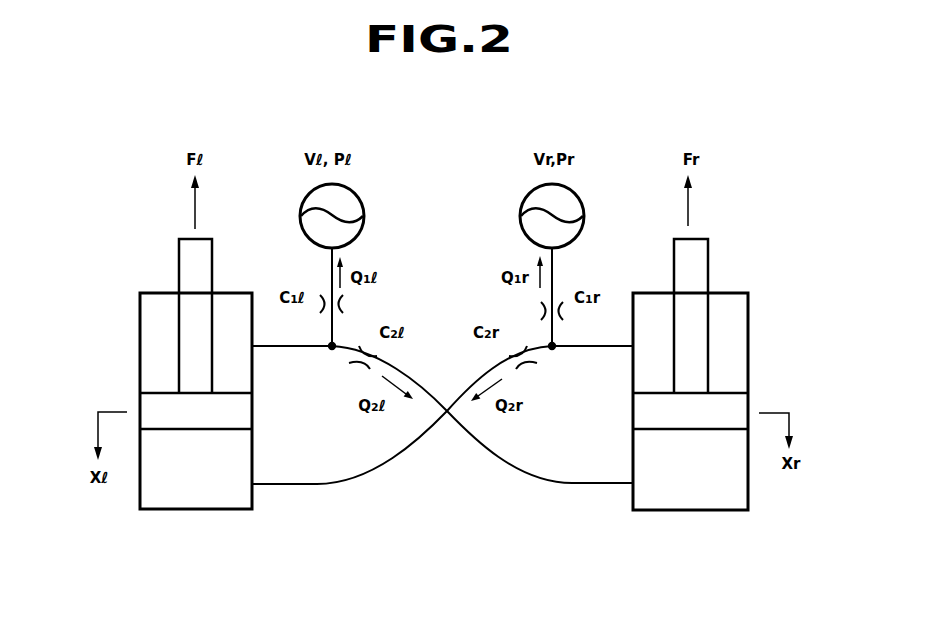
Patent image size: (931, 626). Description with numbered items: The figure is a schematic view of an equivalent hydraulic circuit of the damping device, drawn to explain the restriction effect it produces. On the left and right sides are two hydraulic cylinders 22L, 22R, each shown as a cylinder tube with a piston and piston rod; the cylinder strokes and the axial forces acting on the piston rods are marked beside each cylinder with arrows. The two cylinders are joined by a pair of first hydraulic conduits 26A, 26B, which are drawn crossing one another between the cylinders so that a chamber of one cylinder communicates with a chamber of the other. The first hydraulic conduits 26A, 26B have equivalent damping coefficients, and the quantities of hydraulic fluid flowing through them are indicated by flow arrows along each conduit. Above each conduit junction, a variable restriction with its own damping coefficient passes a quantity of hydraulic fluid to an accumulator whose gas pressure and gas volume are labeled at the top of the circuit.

The left hydraulic cylinder 22L is at (138, 318).
The right hydraulic cylinder 22R is at (746, 320).
The first hydraulic conduit 26A is at (283, 346).
The first hydraulic conduit 26B is at (337, 483).